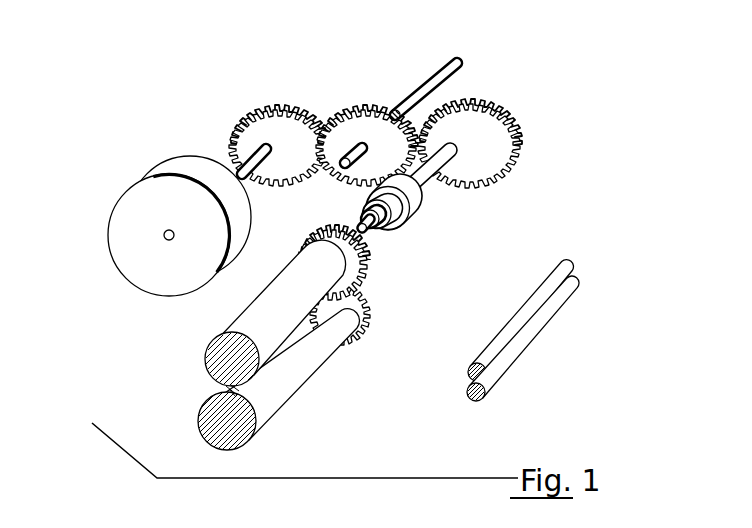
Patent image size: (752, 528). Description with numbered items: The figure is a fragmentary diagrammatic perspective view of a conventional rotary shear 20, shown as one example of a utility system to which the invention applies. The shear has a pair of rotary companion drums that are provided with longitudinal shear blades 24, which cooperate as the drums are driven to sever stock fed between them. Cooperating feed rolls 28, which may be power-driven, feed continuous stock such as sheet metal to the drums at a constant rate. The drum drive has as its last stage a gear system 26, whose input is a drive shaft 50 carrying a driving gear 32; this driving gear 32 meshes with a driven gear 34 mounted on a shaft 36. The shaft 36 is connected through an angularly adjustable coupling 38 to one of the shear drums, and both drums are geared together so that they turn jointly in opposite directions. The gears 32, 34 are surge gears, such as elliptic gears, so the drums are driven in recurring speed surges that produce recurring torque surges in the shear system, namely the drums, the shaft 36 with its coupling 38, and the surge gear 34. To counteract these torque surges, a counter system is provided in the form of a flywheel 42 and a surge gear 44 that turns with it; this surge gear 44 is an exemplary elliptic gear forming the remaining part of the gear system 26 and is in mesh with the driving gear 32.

The rotary shear 20 is at (122, 369).
The longitudinal shear blades 24 is at (228, 398).
The gear system 26 is at (389, 82).
The feed rolls 28 is at (524, 339).
The driving gear 32 is at (355, 116).
The driven gear 34 is at (493, 138).
The shaft 36 is at (429, 171).
The angularly adjustable coupling 38 is at (392, 230).
The flywheel 42 is at (151, 187).
The surge gear 44 is at (272, 115).
The drive shaft 50 is at (447, 62).